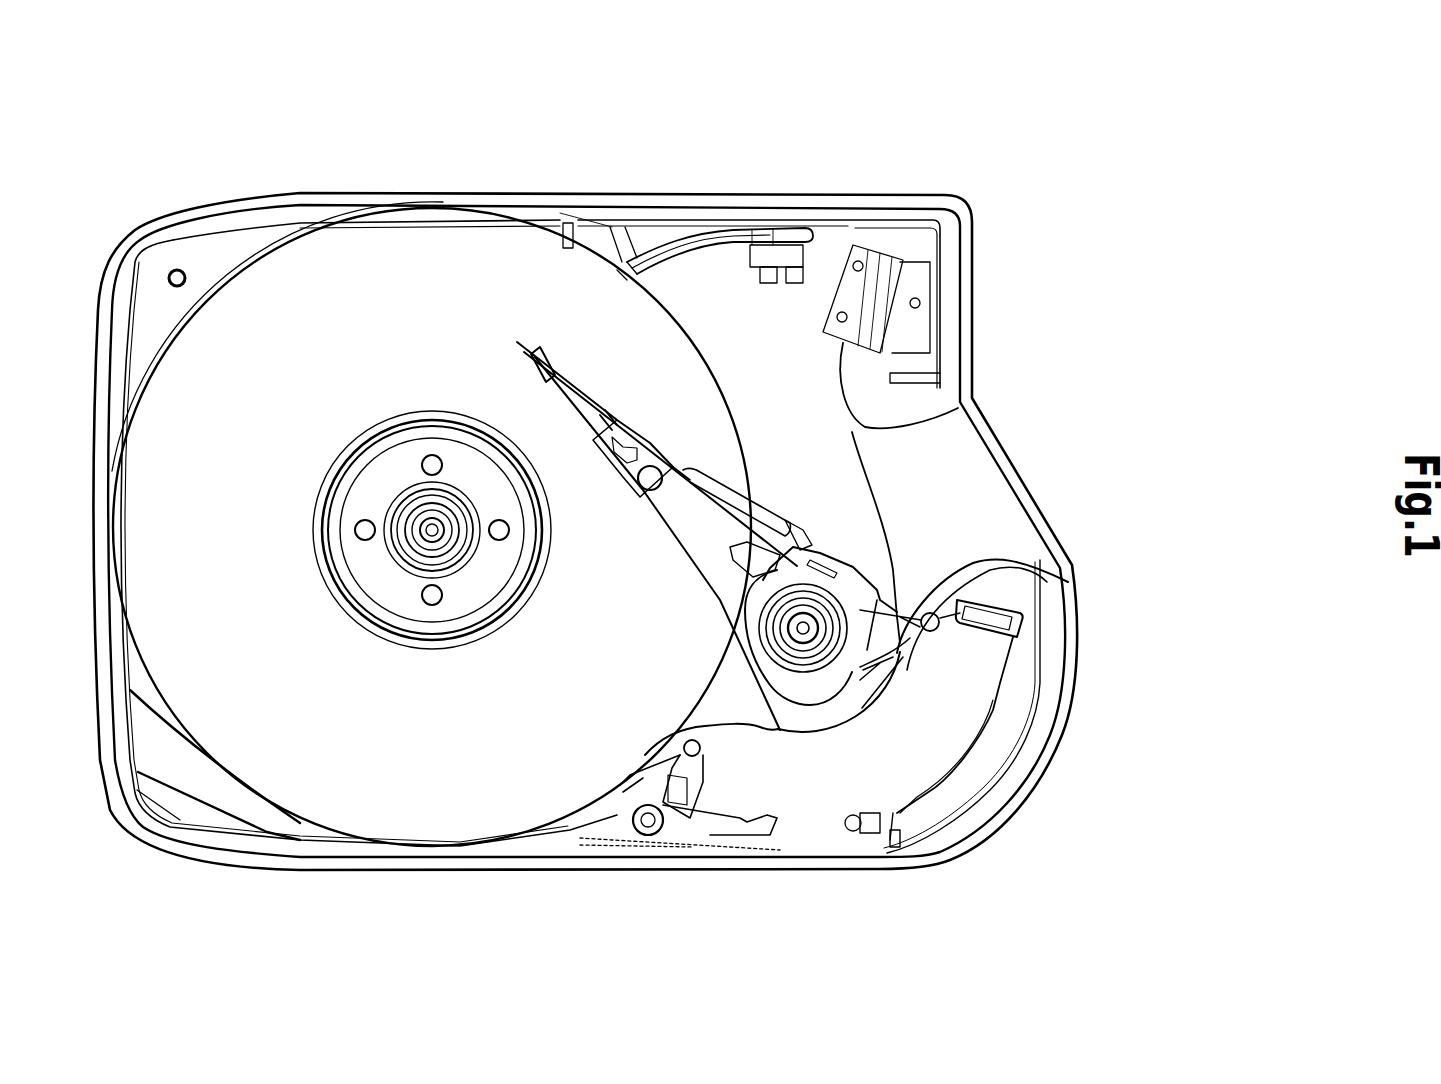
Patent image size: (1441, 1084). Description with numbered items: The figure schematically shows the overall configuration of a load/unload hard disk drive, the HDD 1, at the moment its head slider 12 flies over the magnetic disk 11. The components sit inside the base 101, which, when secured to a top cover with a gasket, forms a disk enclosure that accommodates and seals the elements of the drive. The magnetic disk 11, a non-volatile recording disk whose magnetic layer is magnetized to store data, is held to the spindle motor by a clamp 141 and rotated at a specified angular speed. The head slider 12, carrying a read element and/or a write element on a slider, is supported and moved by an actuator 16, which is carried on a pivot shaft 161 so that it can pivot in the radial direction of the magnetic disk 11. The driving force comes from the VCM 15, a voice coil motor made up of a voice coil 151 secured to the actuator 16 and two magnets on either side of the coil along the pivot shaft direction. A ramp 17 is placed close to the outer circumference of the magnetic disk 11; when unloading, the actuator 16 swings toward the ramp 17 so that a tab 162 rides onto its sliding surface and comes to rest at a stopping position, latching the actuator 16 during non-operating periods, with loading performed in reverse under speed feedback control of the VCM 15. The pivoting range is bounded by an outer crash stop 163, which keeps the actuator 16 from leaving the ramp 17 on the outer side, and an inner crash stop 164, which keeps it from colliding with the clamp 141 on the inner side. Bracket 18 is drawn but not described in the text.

The HDD 1 is at (578, 152).
The base 101 is at (967, 263).
The magnetic disk 11 is at (372, 250).
The clamp 141 is at (397, 600).
The ramp 17 is at (775, 235).
The top yoke bracket 18 is at (975, 398).
The actuator 16 is at (815, 468).
The pivot shaft 161 is at (803, 628).
The tab 162 is at (520, 345).
The head slider 12 is at (545, 387).
The outer crash stop 163 is at (623, 790).
The VCM 15 is at (992, 752).
The voice coil 151 is at (1040, 562).
The inner crash stop 164 is at (1060, 565).